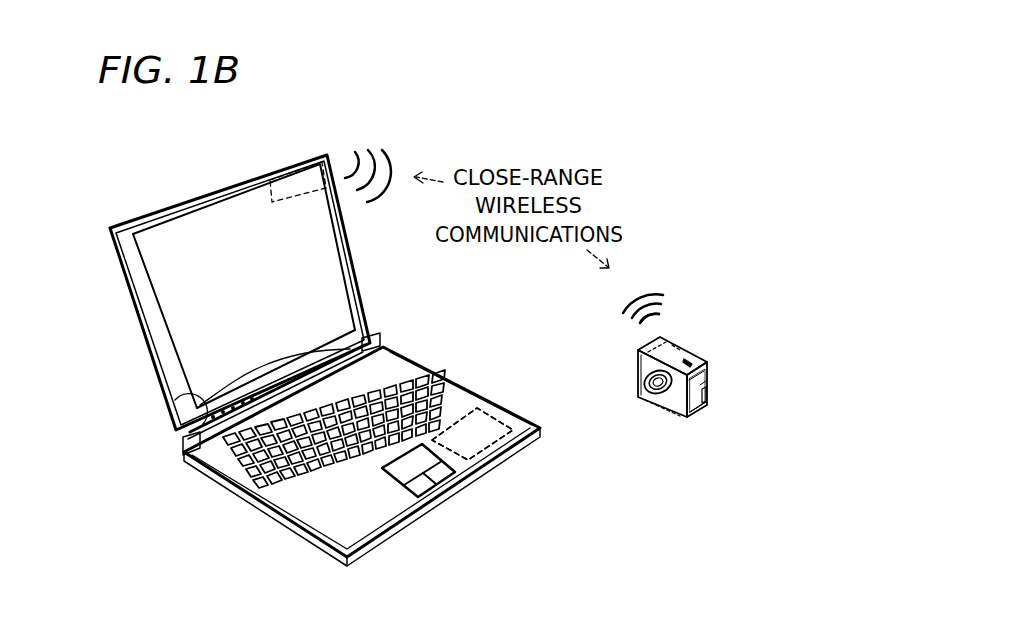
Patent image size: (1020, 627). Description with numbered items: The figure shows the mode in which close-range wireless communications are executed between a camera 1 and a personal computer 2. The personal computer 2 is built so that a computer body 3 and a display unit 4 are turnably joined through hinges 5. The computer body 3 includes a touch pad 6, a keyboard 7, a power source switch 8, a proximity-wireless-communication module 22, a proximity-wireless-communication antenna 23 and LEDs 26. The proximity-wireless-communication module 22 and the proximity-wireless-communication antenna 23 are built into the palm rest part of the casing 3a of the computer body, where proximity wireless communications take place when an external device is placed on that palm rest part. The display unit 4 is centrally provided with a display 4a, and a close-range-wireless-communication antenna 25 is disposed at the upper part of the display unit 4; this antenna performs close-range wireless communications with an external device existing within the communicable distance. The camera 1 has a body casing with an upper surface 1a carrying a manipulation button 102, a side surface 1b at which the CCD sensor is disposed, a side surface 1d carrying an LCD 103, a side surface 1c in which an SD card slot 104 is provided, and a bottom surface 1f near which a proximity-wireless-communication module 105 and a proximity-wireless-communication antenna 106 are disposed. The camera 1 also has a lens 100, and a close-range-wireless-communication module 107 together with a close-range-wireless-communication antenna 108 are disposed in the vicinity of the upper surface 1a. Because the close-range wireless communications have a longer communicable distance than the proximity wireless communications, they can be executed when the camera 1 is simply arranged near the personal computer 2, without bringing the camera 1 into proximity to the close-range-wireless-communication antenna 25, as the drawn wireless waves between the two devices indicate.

The camera 1 is at (770, 198).
The upper surface of the body casing 1a is at (684, 352).
The side surface of the body casing 1b is at (640, 366).
The side surface of the body casing 1c is at (705, 379).
The side surface of the body casing 1d is at (701, 385).
The bottom surface of the body casing 1f is at (662, 410).
The personal computer 2 is at (334, 128).
The computer body 3 is at (203, 549).
The casing of the computer body 3a is at (355, 516).
The display unit 4 is at (115, 342).
The display 4a is at (220, 225).
The hinges 5 is at (207, 404).
The touch pad 6 is at (410, 497).
The keyboard 7 is at (247, 500).
The power source switch 8 is at (425, 370).
The proximity-wireless-communication module 22 is at (470, 478).
The proximity-wireless-communication antenna 23 is at (483, 487).
The close-range-wireless-communication antenna 25 is at (300, 160).
The LEDs 26 is at (392, 543).
The lens 100 is at (643, 387).
The manipulation button 102 is at (692, 366).
The LCD 103 is at (703, 363).
The SD card slot 104 is at (704, 394).
The proximity-wireless-communication module 105 is at (702, 406).
The proximity-wireless-communication antenna 106 is at (787, 427).
The close-range-wireless-communication module 107 is at (663, 338).
The close-range-wireless-communication antenna 108 is at (698, 268).